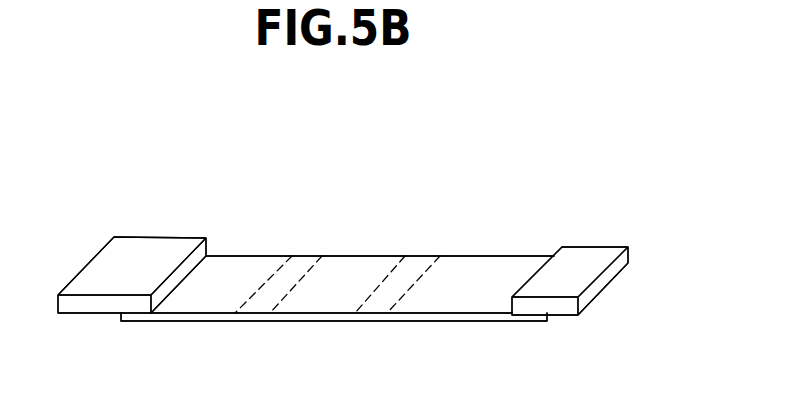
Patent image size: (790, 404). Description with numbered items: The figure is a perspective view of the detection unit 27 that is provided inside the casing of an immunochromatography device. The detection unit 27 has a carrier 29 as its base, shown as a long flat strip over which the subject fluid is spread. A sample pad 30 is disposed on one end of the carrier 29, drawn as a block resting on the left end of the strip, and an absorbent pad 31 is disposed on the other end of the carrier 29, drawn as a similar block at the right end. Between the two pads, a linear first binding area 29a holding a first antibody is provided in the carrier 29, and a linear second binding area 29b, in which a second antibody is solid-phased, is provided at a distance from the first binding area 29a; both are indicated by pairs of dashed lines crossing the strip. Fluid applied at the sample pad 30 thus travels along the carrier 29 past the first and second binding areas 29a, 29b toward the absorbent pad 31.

The detection unit 27 is at (368, 132).
The carrier 29 is at (200, 322).
The first binding area 29a is at (293, 270).
The second binding area 29b is at (415, 270).
The sample pad 30 is at (156, 247).
The absorbent pad 31 is at (586, 248).